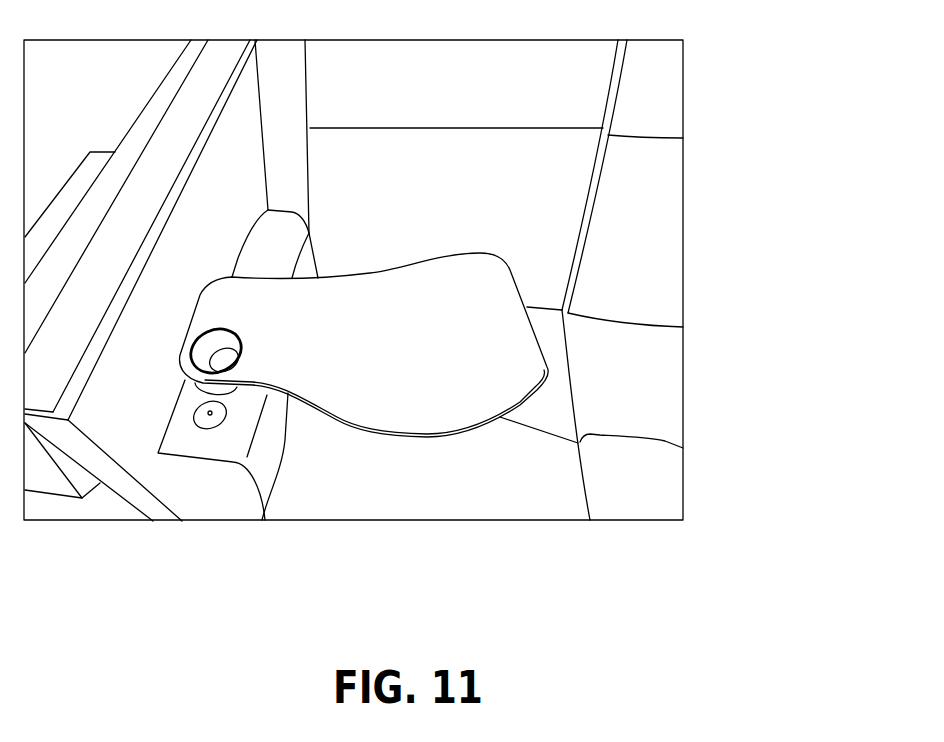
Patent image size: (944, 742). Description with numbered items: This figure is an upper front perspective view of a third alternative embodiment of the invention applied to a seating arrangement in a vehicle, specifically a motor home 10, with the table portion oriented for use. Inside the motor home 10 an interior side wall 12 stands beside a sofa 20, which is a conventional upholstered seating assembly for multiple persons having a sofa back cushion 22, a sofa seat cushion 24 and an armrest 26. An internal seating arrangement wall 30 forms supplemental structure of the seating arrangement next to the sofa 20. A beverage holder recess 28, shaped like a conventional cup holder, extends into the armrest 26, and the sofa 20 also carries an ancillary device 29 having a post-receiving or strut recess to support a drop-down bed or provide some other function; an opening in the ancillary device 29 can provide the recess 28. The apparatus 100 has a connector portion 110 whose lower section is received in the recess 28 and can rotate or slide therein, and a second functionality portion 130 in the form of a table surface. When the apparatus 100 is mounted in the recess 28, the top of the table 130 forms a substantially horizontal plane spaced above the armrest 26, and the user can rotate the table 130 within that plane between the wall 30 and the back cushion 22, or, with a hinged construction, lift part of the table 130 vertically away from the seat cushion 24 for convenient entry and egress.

The motor home 10 is at (715, 252).
The interior side wall 12 is at (73, 121).
The sofa 20 is at (527, 490).
The sofa back cushion 22 is at (508, 188).
The sofa seat cushion 24 is at (553, 468).
The armrest 26 is at (220, 485).
The beverage holder recess 28 is at (218, 390).
The ancillary device 29 is at (220, 418).
The internal seating arrangement wall 30 is at (122, 375).
The apparatus 100 is at (463, 338).
The connector portion 110 is at (222, 357).
The second functionality portion 130 is at (360, 362).